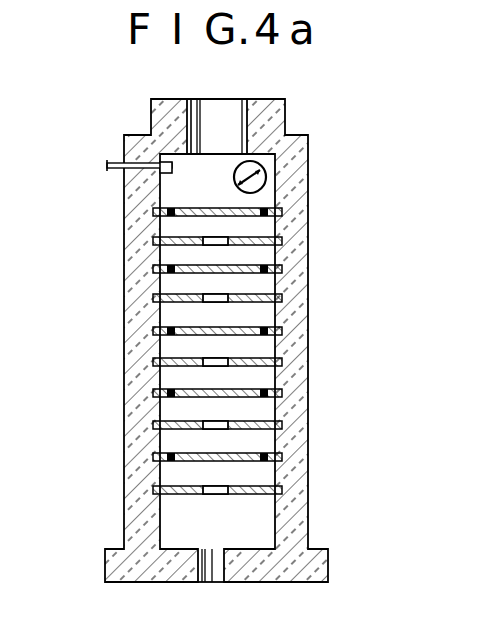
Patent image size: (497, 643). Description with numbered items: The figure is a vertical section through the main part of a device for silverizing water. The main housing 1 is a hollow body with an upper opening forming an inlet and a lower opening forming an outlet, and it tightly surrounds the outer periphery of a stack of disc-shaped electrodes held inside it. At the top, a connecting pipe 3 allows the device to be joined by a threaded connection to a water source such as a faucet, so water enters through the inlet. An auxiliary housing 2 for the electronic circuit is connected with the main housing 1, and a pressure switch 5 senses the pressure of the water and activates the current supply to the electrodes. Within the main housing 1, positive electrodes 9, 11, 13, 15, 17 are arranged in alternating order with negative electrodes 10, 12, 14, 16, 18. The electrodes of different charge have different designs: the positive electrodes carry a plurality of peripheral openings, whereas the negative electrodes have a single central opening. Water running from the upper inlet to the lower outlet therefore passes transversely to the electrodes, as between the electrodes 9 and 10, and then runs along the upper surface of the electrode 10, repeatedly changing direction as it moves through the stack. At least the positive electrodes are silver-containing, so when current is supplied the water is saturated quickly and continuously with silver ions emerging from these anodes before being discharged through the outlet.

The main housing 1 is at (130, 283).
The auxiliary housing 2 is at (110, 171).
The connecting pipe 3 is at (273, 113).
The pressure switch 5 is at (267, 181).
The positive electrode 9 is at (283, 213).
The negative electrode 10 is at (283, 242).
The positive electrode 11 is at (283, 270).
The negative electrode 12 is at (283, 299).
The positive electrode 13 is at (283, 331).
The negative electrode 14 is at (283, 362).
The positive electrode 15 is at (283, 393).
The negative electrode 16 is at (283, 425).
The positive electrode 17 is at (283, 457).
The negative electrode 18 is at (283, 490).